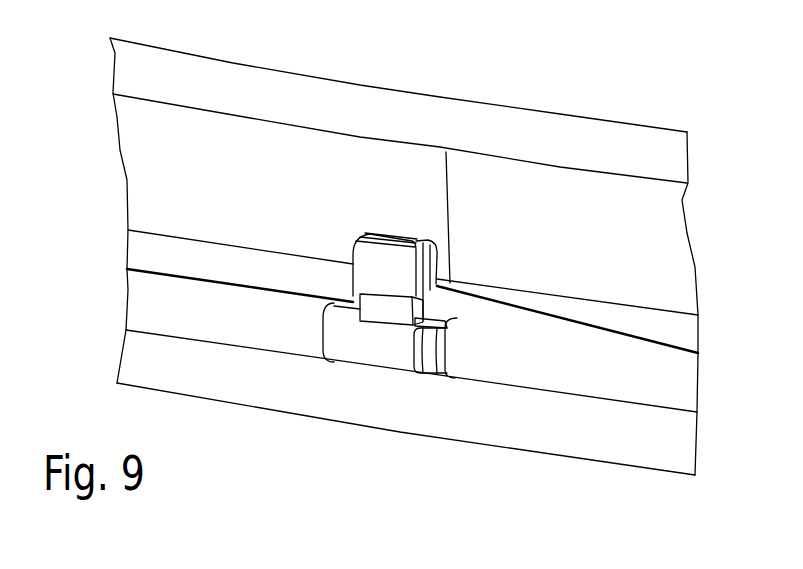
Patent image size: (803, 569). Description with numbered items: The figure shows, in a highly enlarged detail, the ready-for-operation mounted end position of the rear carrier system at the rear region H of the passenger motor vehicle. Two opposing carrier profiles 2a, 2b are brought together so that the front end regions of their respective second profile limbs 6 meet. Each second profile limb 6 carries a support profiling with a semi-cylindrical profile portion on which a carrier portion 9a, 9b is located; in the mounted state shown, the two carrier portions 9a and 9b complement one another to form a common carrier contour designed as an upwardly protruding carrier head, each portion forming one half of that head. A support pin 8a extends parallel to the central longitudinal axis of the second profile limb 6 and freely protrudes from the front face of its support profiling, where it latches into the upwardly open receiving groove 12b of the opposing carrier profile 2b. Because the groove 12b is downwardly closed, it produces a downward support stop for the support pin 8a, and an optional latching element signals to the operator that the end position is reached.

The rear region H is at (498, 128).
The second profile limb 6 is at (184, 320).
The carrier profile 2a is at (212, 331).
The carrier profile 2b is at (582, 387).
The receiving groove 12b is at (430, 374).
The support pin 8a is at (438, 323).
The carrier portion 9a is at (365, 253).
The carrier portion 9b is at (434, 256).